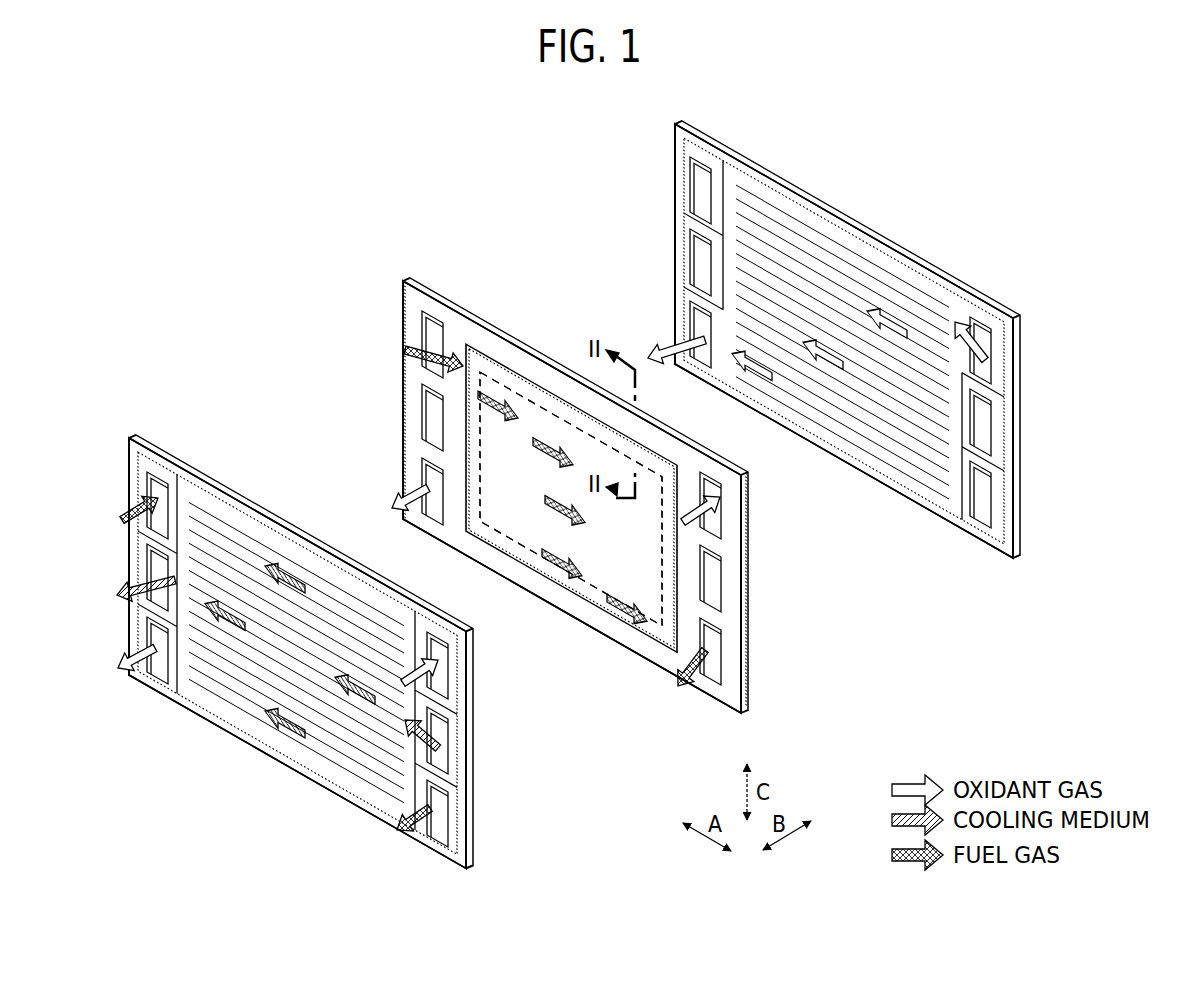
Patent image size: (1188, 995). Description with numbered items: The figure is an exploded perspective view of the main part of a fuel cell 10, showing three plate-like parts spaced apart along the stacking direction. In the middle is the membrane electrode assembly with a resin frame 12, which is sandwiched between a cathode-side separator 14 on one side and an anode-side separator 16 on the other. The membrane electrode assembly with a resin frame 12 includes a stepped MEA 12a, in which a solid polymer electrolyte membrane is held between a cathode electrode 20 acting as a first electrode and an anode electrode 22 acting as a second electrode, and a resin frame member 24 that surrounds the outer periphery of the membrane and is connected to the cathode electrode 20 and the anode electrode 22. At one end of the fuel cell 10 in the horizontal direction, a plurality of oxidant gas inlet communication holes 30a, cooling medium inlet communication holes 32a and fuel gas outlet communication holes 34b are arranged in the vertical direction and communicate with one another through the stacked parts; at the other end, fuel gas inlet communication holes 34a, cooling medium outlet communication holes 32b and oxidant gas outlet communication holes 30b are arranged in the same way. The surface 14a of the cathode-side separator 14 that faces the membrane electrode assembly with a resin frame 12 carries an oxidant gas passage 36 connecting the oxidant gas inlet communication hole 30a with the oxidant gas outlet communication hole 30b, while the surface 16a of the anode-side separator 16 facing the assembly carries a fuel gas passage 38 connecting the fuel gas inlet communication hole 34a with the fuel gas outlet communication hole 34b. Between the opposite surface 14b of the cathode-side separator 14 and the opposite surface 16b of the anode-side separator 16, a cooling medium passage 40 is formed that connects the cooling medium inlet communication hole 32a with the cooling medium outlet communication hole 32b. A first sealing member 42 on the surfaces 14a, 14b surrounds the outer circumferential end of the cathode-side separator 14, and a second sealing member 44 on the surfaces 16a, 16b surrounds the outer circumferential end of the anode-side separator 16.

The fuel cell 10 is at (258, 270).
The membrane electrode assembly with a resin frame 12 is at (403, 285).
The stepped MEA 12a is at (620, 712).
The cathode-side separator 14 is at (672, 126).
The surface of the cathode-side separator 14a is at (997, 533).
The surface of the cathode-side separator 14b is at (1017, 522).
The anode-side separator 16 is at (127, 447).
The surface of the anode-side separator 16a is at (473, 840).
The surface of the anode-side separator 16b is at (448, 848).
The cathode electrode 20 is at (596, 578).
The anode electrode 22 is at (577, 583).
The resin frame member 24 is at (493, 350).
The oxidant gas inlet communication hole 30a is at (988, 362).
The oxidant gas outlet communication hole 30b is at (700, 313).
The cooling medium inlet communication hole 32a is at (988, 408).
The cooling medium outlet communication hole 32b is at (700, 236).
The fuel gas inlet communication hole 34a is at (700, 162).
The fuel gas outlet communication hole 34b is at (988, 493).
The oxidant gas passage 36 is at (864, 270).
The fuel gas passage 38 is at (255, 562).
The cooling medium passage 40 is at (221, 530).
The first sealing member 42 is at (826, 218).
The second sealing member 44 is at (320, 560).